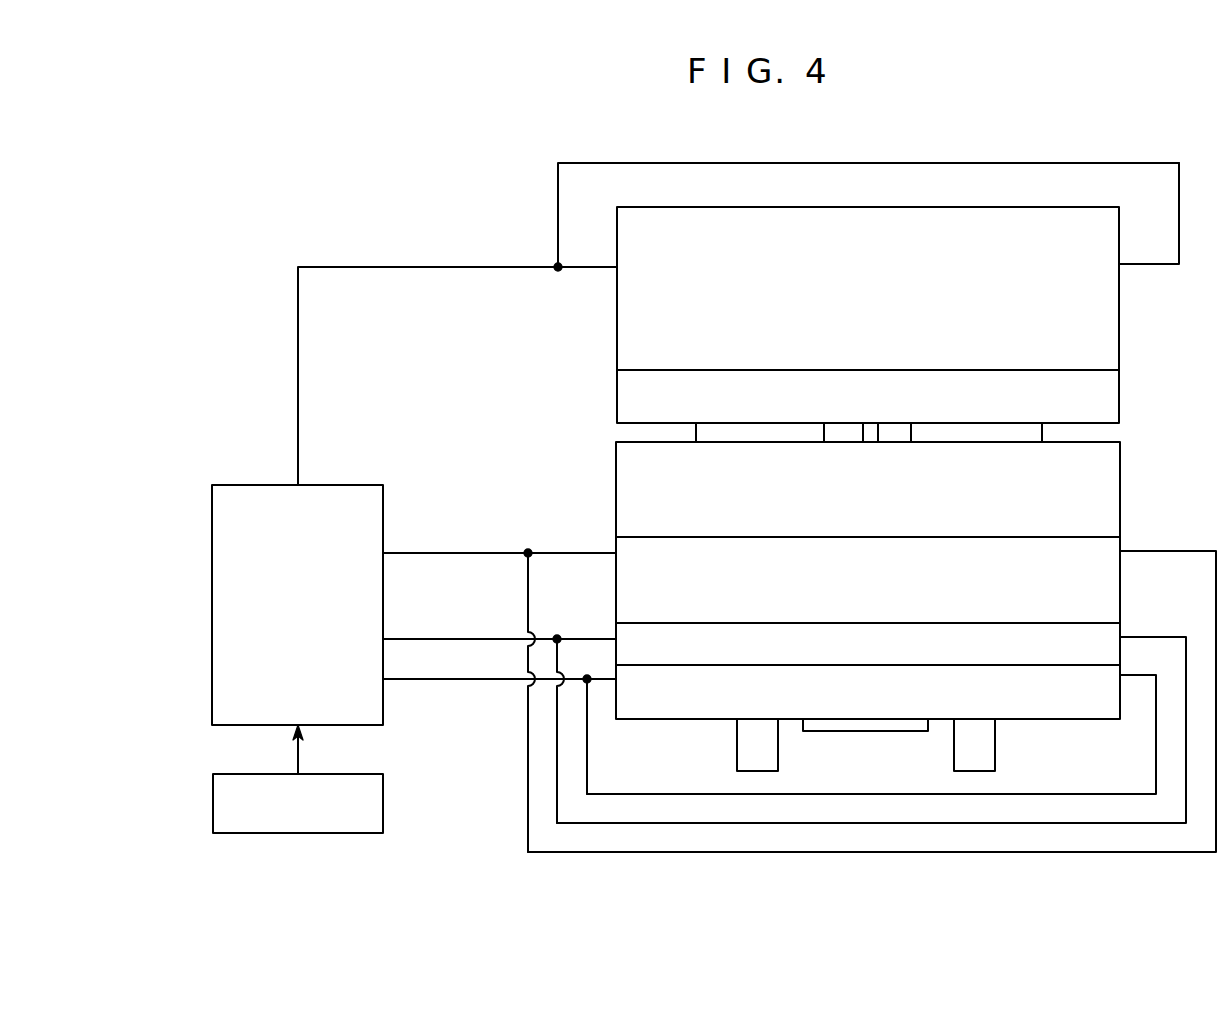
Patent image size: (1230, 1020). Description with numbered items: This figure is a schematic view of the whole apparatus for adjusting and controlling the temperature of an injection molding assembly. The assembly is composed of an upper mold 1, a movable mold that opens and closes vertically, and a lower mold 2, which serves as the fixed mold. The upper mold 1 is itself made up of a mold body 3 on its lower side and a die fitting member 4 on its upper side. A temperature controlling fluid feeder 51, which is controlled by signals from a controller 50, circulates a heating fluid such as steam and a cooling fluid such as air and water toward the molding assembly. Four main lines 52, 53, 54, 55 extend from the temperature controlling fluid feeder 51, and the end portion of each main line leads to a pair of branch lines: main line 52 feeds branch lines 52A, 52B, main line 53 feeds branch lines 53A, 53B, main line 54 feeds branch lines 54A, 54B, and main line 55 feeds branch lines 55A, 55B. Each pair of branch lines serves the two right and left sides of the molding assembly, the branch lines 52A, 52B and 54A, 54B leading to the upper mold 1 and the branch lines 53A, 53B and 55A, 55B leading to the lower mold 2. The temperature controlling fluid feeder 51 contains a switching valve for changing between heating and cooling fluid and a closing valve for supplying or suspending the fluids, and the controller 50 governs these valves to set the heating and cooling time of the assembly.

The upper mold 1 is at (826, 609).
The lower mold 2 is at (650, 724).
The mold body 3 is at (630, 578).
The die fitting member 4 is at (628, 320).
The controller 50 is at (297, 834).
The temperature controlling fluid feeder 51 is at (212, 606).
The main line 52 is at (430, 267).
The branch line 52A is at (592, 264).
The branch line 52B is at (1152, 264).
The main line 53 is at (426, 680).
The branch line 53A is at (603, 679).
The branch line 53B is at (1140, 677).
The main line 54 is at (448, 553).
The branch line 54A is at (543, 553).
The branch line 54B is at (1160, 551).
The main line 55 is at (433, 639).
The branch line 55A is at (588, 639).
The branch line 55B is at (1152, 636).